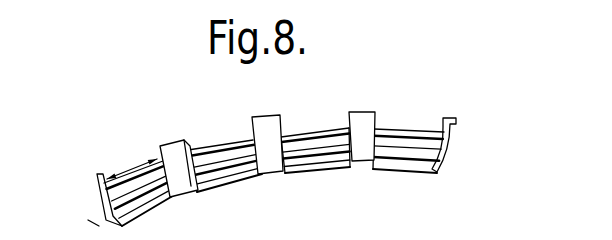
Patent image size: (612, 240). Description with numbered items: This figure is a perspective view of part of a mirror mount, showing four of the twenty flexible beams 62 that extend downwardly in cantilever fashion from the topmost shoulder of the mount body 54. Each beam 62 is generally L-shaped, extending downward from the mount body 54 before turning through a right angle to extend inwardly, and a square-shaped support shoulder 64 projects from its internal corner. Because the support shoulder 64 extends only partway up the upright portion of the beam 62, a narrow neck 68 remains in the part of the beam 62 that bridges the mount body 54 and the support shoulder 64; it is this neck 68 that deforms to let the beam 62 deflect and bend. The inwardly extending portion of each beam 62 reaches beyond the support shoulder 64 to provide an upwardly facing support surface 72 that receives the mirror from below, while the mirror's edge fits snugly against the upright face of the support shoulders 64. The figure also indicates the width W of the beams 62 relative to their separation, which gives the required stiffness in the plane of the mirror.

The mount body 54 is at (277, 139).
The flexible beam 62 is at (246, 192).
The support shoulder 64 is at (98, 198).
The neck 68 is at (178, 144).
The support surface 72 is at (425, 159).
The width of the beams W is at (132, 160).